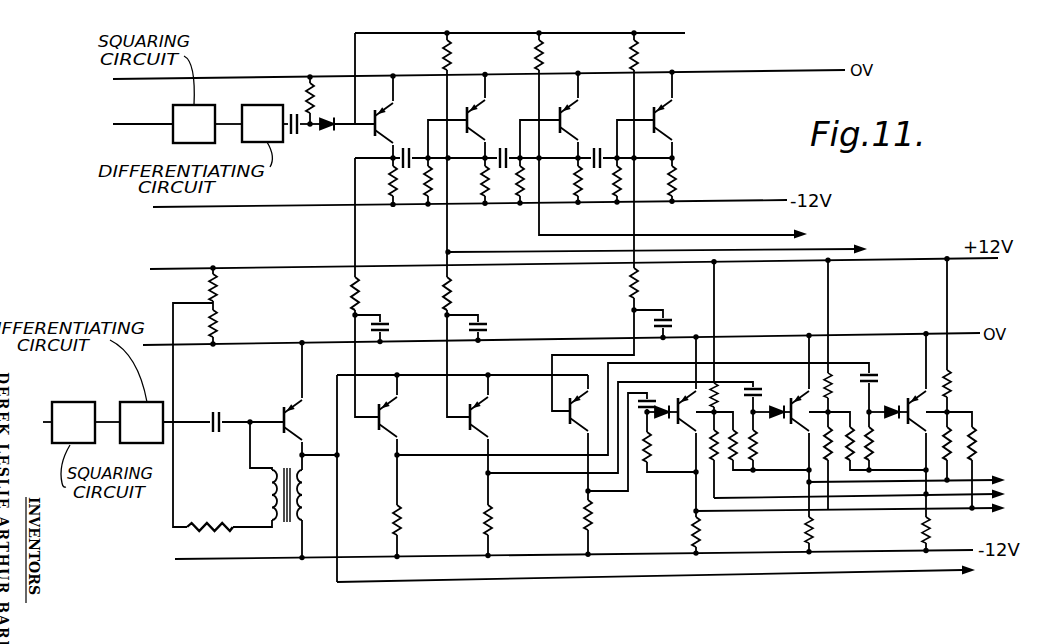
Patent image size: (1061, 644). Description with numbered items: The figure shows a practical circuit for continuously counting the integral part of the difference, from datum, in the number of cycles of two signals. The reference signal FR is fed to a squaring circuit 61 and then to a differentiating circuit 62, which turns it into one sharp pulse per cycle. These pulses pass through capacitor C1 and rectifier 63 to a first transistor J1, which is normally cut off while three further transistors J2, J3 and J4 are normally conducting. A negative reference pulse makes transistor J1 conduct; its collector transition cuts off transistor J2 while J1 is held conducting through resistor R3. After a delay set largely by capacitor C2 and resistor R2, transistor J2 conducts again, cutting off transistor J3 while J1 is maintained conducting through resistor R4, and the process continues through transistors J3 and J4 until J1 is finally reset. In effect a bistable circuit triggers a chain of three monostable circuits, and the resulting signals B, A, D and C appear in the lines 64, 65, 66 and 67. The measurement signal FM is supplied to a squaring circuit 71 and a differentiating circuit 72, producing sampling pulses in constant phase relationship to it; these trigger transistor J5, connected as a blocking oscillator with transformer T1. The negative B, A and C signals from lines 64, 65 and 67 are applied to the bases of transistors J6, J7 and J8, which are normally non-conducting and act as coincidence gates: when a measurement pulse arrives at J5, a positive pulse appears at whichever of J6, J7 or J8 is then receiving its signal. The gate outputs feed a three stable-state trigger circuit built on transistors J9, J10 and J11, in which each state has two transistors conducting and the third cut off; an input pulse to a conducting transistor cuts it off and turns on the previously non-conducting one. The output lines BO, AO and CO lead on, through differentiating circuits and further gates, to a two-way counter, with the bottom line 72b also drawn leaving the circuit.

The squaring circuit 61 is at (194, 124).
The differentiating circuit 62 is at (262, 123).
The rectifier 63 is at (332, 133).
The line 64 is at (355, 237).
The line 65 is at (448, 231).
The line 66 is at (541, 221).
The line 67 is at (636, 221).
The squaring circuit 71 is at (73, 422).
The differentiating circuit 72 is at (141, 422).
The output lead 72b is at (882, 574).
The capacitor C1 is at (296, 137).
The capacitor C2 is at (407, 146).
The resistor R2 is at (432, 188).
The resistor R3 is at (461, 50).
The resistor R4 is at (553, 50).
The first transistor J1 is at (377, 113).
The second transistor J2 is at (477, 115).
The transistor J3 is at (570, 115).
The transistor J4 is at (664, 122).
The transistor J5 is at (290, 428).
The transistor J6 is at (387, 425).
The transistor J7 is at (476, 425).
The transistor J8 is at (576, 426).
The transistor J9 is at (689, 436).
The transistor J10 is at (801, 436).
The transistor J11 is at (918, 436).
The transformer T1 is at (285, 524).
The reference signal FR is at (143, 114).
The measurement signal FM is at (35, 406).
The output line A0 AO is at (921, 477).
The output line B0 BO is at (874, 495).
The output line C0 CO is at (865, 511).